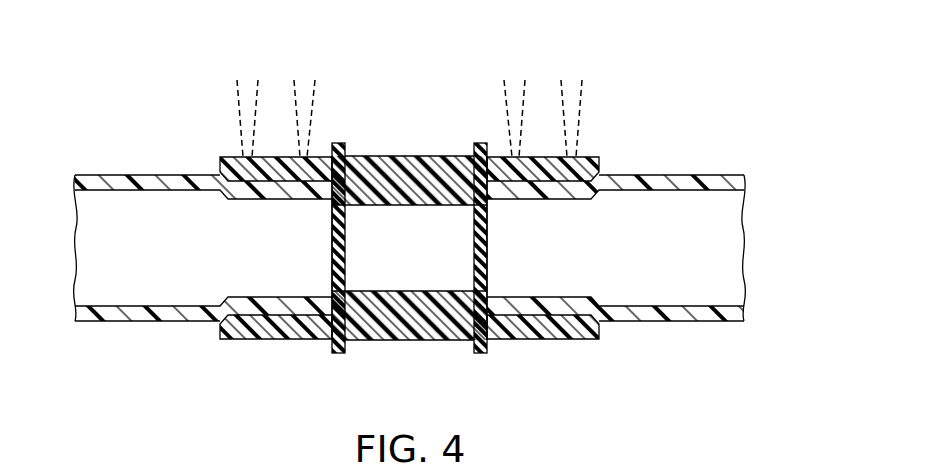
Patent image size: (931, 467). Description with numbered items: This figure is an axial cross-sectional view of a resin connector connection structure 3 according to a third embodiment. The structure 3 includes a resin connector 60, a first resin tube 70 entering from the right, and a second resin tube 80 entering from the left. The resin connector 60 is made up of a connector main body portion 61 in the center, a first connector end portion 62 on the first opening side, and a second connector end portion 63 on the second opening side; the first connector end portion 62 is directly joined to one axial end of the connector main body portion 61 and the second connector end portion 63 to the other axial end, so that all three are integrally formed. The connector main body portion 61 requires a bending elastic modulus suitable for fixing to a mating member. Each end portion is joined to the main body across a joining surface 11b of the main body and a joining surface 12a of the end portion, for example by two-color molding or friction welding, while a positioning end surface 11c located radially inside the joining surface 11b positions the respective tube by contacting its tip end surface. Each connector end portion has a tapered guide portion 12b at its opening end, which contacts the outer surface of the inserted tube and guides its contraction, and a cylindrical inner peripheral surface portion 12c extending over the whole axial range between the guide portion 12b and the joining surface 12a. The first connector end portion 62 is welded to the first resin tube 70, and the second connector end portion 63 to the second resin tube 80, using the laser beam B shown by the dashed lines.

The resin connector connection structure 3 is at (726, 137).
The resin connector 60 is at (325, 63).
The connector main body portion 61 is at (392, 157).
The first connector end portion 62 is at (497, 157).
The second connector end portion 63 is at (320, 157).
The first resin tube 70 is at (707, 318).
The second resin tube 80 is at (102, 321).
The joining surface 11b is at (335, 305).
The positioning end surface 11c is at (323, 302).
The joining surface 12a is at (342, 322).
The guide portion 12b is at (215, 308).
The cylindrical inner peripheral surface portion 12c is at (270, 300).
The laser beam B is at (237, 103).